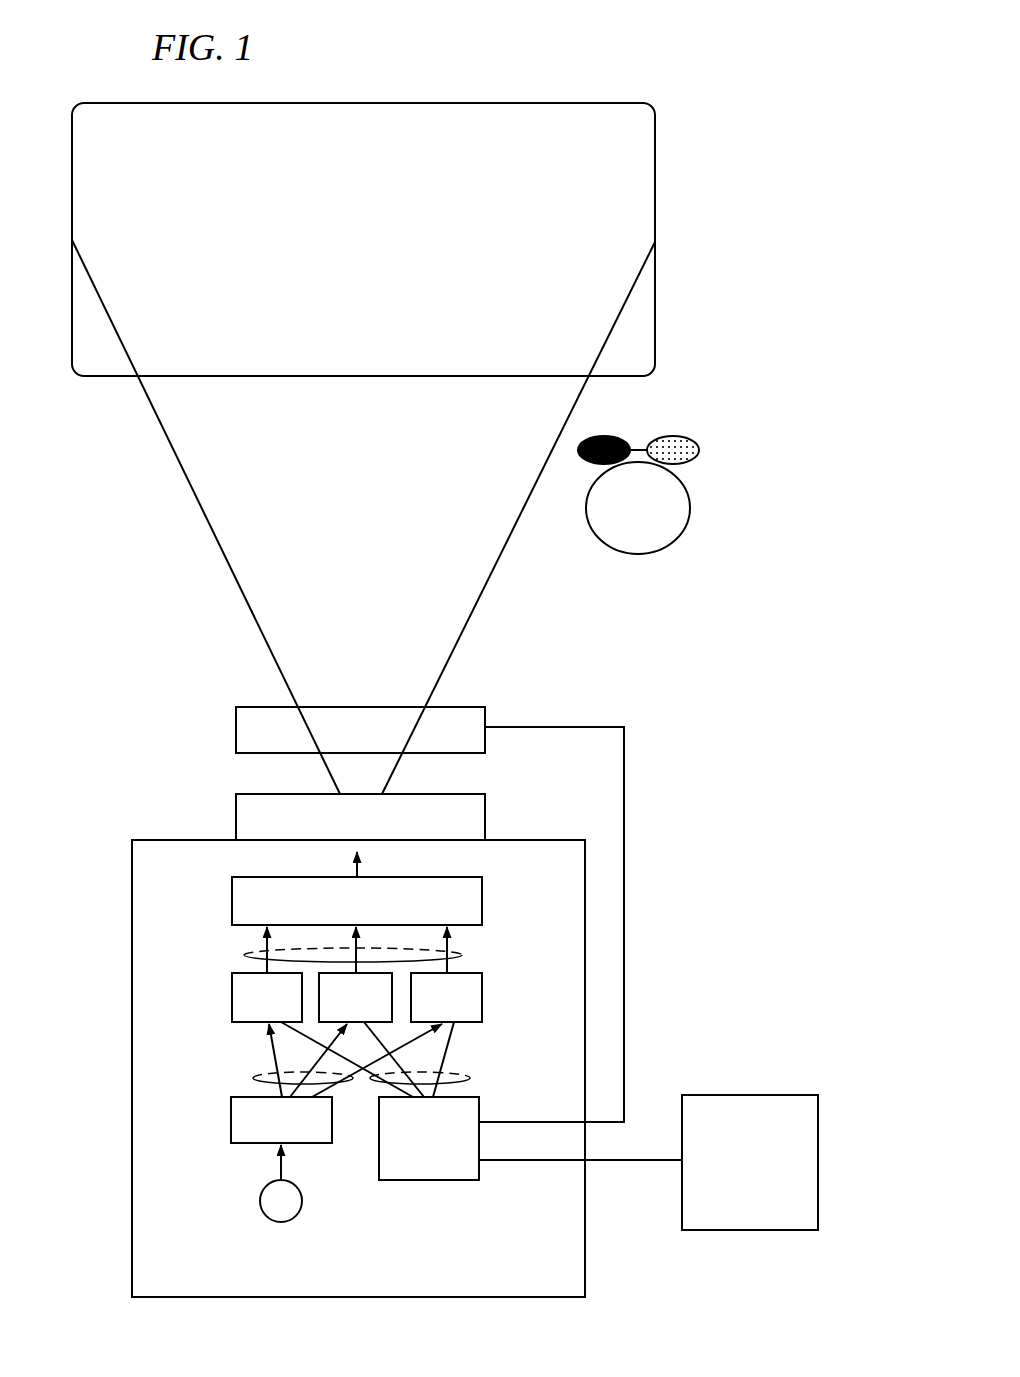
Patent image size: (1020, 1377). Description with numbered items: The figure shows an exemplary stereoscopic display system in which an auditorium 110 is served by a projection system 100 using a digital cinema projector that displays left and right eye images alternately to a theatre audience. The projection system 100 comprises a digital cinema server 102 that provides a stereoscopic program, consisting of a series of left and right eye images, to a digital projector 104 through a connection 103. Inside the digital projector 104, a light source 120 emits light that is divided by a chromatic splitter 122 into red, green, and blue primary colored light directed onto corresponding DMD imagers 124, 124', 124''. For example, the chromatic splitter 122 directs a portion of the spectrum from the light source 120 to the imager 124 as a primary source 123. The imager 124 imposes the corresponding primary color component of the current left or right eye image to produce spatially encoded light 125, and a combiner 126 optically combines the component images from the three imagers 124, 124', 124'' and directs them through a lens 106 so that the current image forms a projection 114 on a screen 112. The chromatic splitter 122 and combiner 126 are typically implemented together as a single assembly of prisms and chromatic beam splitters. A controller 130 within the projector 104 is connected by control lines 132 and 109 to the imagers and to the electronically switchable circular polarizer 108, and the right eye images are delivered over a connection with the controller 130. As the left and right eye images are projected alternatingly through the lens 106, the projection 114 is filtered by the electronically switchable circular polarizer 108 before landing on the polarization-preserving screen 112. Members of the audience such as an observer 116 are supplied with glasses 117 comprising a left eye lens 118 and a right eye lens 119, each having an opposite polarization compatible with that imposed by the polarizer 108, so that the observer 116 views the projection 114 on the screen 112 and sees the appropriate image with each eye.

The projection system 100 is at (681, 782).
The digital cinema server 102 is at (752, 1094).
The connection 103 is at (632, 1162).
The digital projector 104 is at (132, 1250).
The lens 106 is at (236, 814).
The electronically switchable circular polarizer 108 is at (236, 724).
The control connection 109 is at (624, 916).
The auditorium 110 is at (637, 634).
The polarization-preserving screen 112 is at (312, 377).
The projection 114 is at (458, 634).
The observer 116 is at (690, 522).
The glasses 117 is at (562, 496).
The left eye lens 118 is at (612, 438).
The right eye lens 119 is at (695, 443).
The light source 120 is at (260, 1201).
The chromatic splitter 122 is at (231, 1118).
The primary source 123 is at (262, 1077).
The DMD imager 124 is at (267, 974).
The DMD imager 124' is at (355, 974).
The DMD imager 124'' is at (446, 974).
The spatially encoded light 125 is at (465, 957).
The combiner 126 is at (232, 900).
The controller 130 is at (430, 1180).
The control signals 132 is at (472, 1079).